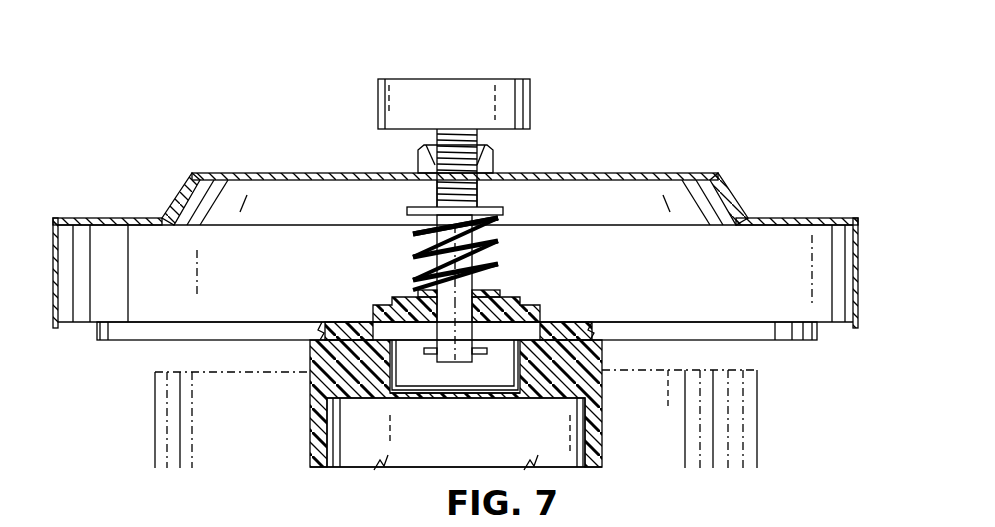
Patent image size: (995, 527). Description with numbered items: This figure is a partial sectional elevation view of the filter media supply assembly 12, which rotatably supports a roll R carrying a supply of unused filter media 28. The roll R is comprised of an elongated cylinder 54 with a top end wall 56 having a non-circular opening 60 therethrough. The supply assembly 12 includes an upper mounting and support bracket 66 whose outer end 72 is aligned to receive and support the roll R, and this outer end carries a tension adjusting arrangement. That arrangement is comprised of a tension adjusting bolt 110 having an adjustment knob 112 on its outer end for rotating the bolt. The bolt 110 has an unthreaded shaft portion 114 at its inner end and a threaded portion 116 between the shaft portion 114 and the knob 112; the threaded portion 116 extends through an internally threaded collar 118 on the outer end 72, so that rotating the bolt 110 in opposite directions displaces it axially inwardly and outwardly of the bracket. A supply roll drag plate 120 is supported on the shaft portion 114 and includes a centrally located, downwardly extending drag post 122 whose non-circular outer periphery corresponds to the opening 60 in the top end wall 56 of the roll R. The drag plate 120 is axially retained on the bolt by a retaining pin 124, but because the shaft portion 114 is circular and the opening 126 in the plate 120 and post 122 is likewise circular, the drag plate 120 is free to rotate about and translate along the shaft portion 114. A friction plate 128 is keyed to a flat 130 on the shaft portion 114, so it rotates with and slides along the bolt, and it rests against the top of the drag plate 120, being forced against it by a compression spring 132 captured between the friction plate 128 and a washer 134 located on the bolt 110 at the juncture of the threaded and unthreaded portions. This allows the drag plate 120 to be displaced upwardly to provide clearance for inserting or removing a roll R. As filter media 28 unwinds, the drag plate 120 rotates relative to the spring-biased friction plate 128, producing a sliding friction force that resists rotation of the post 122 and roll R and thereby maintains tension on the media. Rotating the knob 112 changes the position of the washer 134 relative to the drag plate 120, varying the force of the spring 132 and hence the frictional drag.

The supply assembly 12 is at (650, 63).
The filter media 28 is at (752, 432).
The elongated cylinder 54 is at (317, 437).
The top end wall 56 is at (318, 360).
The non-circular opening 60 is at (518, 397).
The upper mounting and support bracket 66 is at (230, 130).
The outer end 72 is at (770, 218).
The tension adjusting bolt 110 is at (482, 189).
The adjustment knob 112 is at (483, 85).
The unthreaded shaft portion 114 is at (443, 327).
The threaded portion 116 is at (450, 142).
The internally threaded collar 118 is at (418, 158).
The supply roll drag plate 120 is at (132, 332).
The drag post 122 is at (514, 370).
The retaining pin 124 is at (432, 355).
The opening 126 is at (503, 325).
The friction plate 128 is at (505, 302).
The flat 130 is at (500, 256).
The compression spring 132 is at (413, 250).
The washer 134 is at (503, 209).
The roll R is at (606, 436).